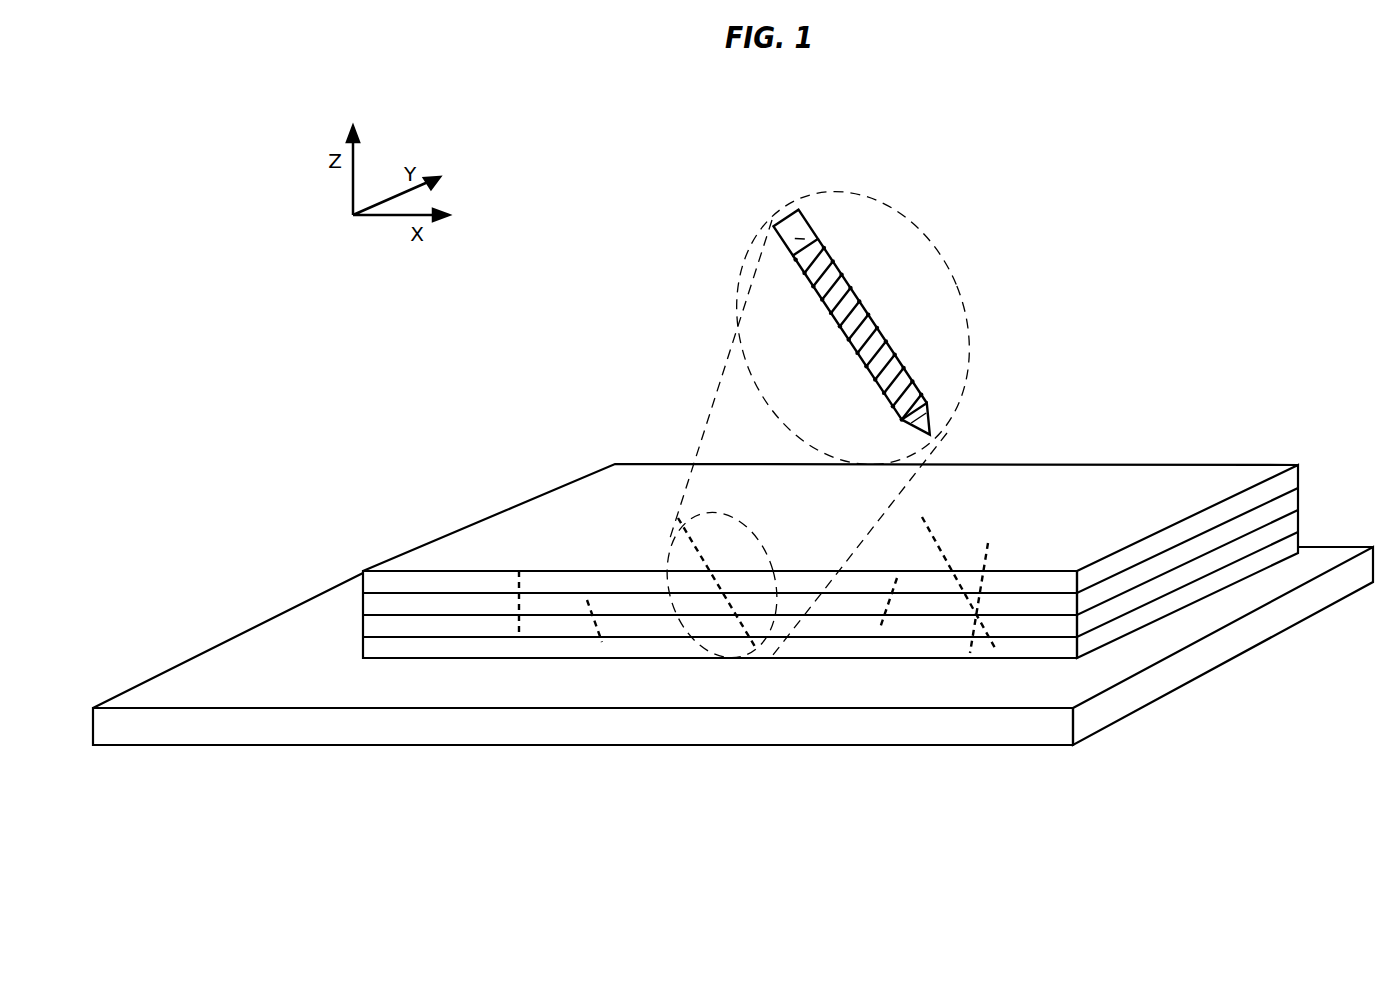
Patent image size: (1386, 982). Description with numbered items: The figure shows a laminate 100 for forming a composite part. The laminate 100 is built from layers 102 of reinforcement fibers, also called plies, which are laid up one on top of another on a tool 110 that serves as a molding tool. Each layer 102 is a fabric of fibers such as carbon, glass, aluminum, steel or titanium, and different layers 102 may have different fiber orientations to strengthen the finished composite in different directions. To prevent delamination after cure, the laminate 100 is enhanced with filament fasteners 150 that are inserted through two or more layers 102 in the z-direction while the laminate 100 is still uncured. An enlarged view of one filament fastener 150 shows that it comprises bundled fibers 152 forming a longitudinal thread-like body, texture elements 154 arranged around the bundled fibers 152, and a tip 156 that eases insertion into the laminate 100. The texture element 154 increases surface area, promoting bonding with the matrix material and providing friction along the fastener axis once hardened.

The laminate 100 is at (479, 401).
The layers 102 is at (364, 580).
The tool 110 is at (213, 668).
The filament fasteners 150 is at (765, 402).
The bundled fibers 152 is at (837, 285).
The texture element 154 is at (835, 327).
The tip 156 is at (923, 420).